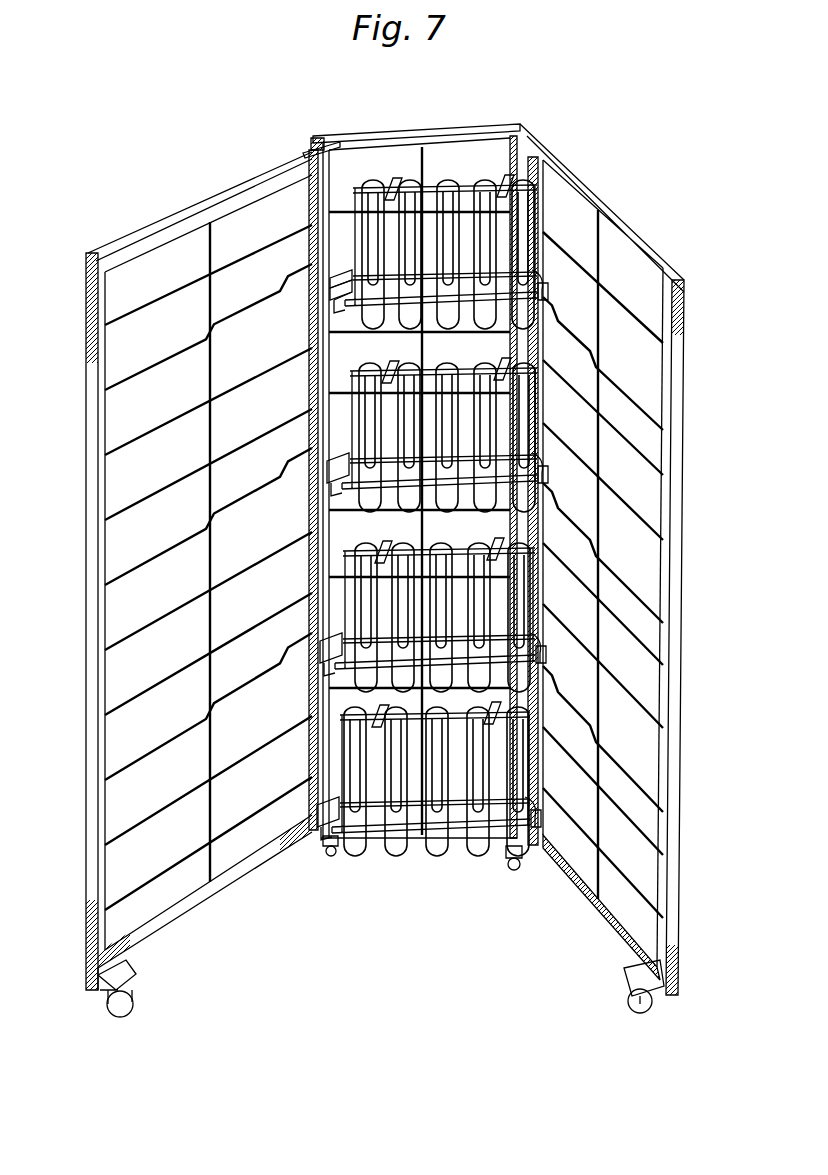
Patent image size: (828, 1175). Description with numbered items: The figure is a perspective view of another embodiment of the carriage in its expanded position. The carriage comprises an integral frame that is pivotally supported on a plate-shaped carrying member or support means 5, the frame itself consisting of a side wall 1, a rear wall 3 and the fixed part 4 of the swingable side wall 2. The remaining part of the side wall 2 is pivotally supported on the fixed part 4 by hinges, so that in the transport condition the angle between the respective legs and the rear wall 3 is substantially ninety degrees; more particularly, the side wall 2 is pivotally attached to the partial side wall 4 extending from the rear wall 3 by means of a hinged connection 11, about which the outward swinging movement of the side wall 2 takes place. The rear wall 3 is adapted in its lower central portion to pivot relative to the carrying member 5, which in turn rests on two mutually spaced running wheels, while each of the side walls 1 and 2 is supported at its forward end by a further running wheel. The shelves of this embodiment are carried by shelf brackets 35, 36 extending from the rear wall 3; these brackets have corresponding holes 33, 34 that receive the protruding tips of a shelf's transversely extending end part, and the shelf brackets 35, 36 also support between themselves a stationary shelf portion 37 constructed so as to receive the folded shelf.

The side wall 1 is at (578, 178).
The swingable side wall 2 is at (185, 216).
The rear wall 3 is at (398, 134).
The fixed part of the swingable side wall 4 is at (314, 142).
The carrying member 5 is at (498, 846).
The hinged connection 11 is at (328, 143).
The hole 33 is at (551, 299).
The hole 34 is at (336, 312).
The shelf bracket 35 is at (328, 294).
The shelf bracket 36 is at (540, 278).
The stationary shelf portion 37 is at (340, 276).